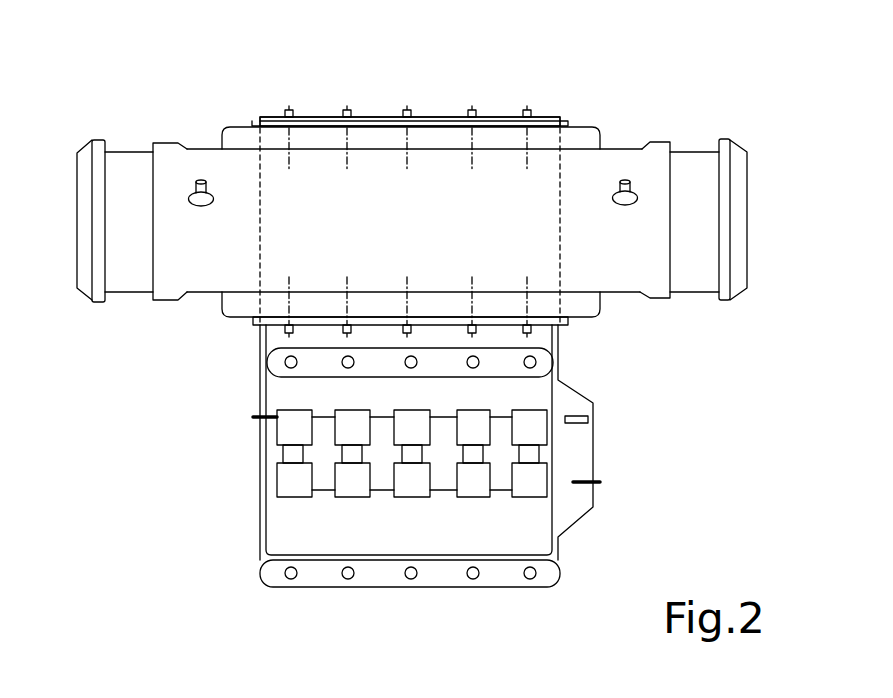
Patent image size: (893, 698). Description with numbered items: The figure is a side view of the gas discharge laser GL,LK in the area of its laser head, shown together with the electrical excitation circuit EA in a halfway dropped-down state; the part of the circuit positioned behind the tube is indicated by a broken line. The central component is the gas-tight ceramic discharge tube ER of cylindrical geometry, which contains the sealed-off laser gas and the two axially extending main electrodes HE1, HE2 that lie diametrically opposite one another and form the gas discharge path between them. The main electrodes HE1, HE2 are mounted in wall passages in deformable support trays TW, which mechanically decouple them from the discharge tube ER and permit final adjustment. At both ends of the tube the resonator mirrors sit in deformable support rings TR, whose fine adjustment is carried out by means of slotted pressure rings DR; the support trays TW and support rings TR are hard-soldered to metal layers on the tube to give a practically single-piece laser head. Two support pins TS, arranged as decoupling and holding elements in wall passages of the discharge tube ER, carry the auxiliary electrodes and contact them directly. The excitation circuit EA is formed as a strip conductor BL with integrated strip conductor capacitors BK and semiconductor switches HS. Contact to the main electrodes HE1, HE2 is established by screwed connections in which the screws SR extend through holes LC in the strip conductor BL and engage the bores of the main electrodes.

The gas discharge laser / laser head GL,LK is at (146, 52).
The slotted pressure rings DR is at (85, 175).
The support rings TR is at (128, 168).
The support pins TS is at (195, 192).
The support trays TW is at (222, 147).
The first main electrode HE1 is at (255, 126).
The second main electrode HE2 is at (253, 320).
The screws SR is at (350, 113).
The strip conductor BL is at (444, 118).
The discharge tube ER is at (622, 262).
The electrical excitation circuit EA is at (186, 442).
The strip conductor capacitors BK is at (562, 393).
The holes LC is at (531, 362).
The semiconductor switches HS is at (537, 485).